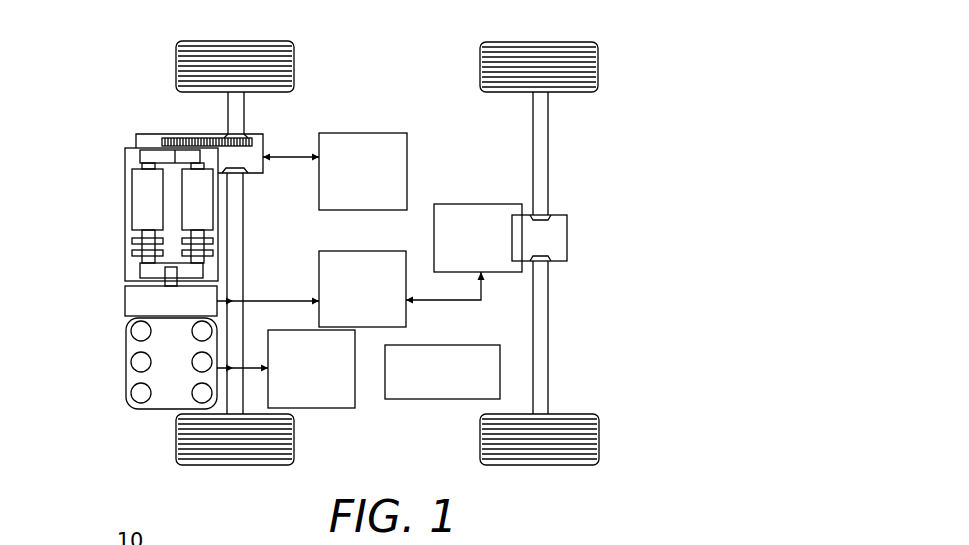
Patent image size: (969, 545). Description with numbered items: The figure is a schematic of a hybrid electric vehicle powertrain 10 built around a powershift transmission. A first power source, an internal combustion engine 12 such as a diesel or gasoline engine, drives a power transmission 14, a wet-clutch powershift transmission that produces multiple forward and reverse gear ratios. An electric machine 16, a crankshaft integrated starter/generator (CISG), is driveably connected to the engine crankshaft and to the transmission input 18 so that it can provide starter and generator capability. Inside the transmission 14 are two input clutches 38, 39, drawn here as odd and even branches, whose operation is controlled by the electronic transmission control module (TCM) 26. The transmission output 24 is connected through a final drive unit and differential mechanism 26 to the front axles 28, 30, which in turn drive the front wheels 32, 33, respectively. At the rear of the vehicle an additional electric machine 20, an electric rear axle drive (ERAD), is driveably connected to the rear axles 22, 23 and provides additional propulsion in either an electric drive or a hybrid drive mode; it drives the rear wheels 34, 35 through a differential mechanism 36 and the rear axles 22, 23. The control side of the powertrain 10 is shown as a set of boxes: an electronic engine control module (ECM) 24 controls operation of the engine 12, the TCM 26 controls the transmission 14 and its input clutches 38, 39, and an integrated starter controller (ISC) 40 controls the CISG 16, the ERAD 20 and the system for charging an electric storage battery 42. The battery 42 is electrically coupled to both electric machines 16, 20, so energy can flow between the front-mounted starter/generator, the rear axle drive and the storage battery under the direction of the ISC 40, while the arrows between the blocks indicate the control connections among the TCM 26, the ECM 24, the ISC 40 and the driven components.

The powertrain 10 is at (78, 76).
The internal combustion engine 12 is at (126, 370).
The power transmission 14 is at (126, 272).
The electric machine 16 is at (126, 300).
The transmission input 18 is at (176, 272).
The additional electric machine 20 is at (477, 204).
The rear axle 22 is at (549, 158).
The rear axle 23 is at (549, 340).
The transmission output / electronic engine control module (ECM) 24 is at (171, 158).
The final drive unit and differential mechanism / electronic transmission control mo 26 is at (143, 135).
The front axle 28 is at (236, 100).
The front axle 30 is at (243, 222).
The front wheel 32 is at (184, 60).
The front wheel 33 is at (182, 440).
The rear wheel 34 is at (592, 62).
The rear wheel 35 is at (592, 435).
The differential mechanism 36 is at (560, 238).
The input clutch 38 is at (205, 257).
The input clutch 39 is at (133, 253).
The integrated starter controller (ISC) 40 is at (332, 252).
The electric storage battery 42 is at (435, 394).